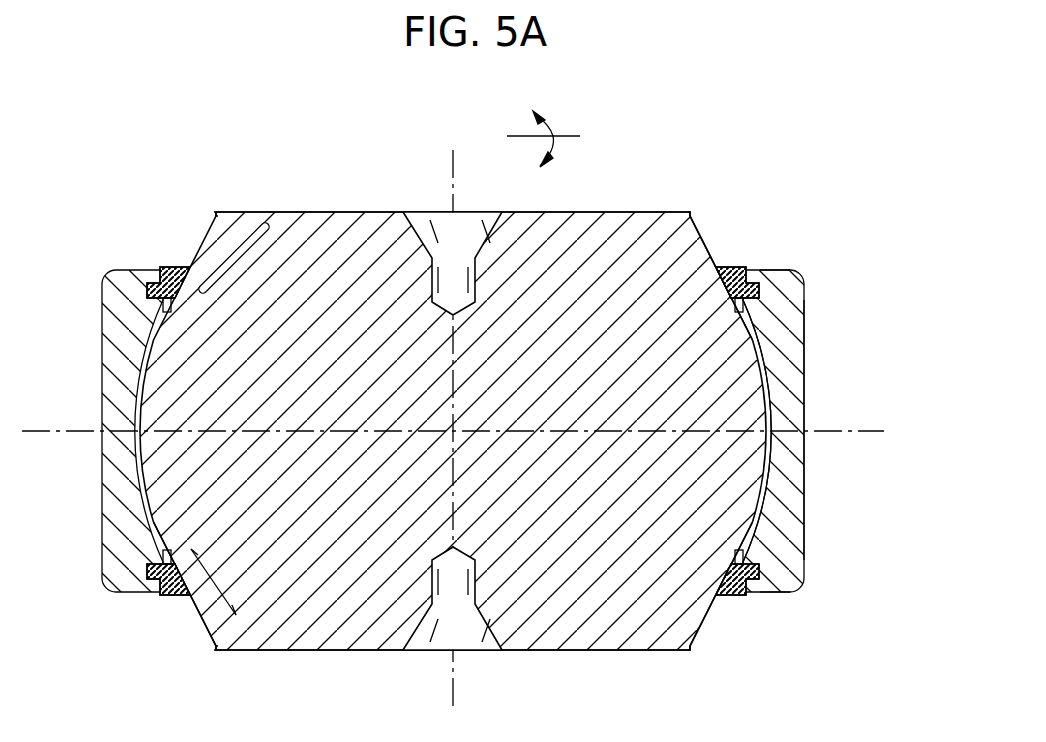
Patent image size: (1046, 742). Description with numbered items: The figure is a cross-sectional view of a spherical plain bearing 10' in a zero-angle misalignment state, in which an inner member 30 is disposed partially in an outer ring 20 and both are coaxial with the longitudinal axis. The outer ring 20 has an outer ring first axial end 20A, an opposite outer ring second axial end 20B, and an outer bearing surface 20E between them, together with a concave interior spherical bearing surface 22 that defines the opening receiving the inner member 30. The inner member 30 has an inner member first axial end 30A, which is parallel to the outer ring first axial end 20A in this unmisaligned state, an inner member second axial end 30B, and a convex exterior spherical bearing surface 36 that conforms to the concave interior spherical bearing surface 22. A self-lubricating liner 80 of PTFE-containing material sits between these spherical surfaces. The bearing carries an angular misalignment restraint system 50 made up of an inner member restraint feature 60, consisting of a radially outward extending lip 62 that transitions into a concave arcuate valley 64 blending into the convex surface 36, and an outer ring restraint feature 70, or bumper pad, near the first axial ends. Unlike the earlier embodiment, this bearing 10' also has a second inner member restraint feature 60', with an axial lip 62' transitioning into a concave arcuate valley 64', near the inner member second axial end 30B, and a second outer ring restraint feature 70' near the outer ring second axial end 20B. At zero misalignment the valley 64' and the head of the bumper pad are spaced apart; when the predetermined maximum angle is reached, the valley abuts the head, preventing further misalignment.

The spherical bearing 10' is at (453, 395).
The outer ring 20 is at (782, 325).
The outer ring first axial end 20A is at (768, 270).
The outer ring second axial end 20B is at (792, 592).
The outer bearing surface 20E is at (806, 392).
The concave interior spherical bearing surface 22 is at (162, 524).
The inner member 30 is at (636, 600).
The inner member first axial end 30A is at (322, 211).
The inner member second axial end 30B is at (284, 652).
The convex exterior spherical bearing surface 36 is at (185, 608).
The angular misalignment restraint system 50 is at (233, 263).
The inner member restraint feature 60 is at (208, 180).
The inner member restraint feature 60' is at (202, 674).
The radially outward extending lip 62 is at (677, 175).
The axial lip 62' is at (701, 684).
The concave arcuate valley 64 is at (721, 259).
The concave arcuate valley 64' is at (734, 604).
The outer ring restraint feature 70 is at (438, 252).
The outer ring restraint feature 70' is at (431, 602).
The self-lubricating liner 80 is at (772, 476).